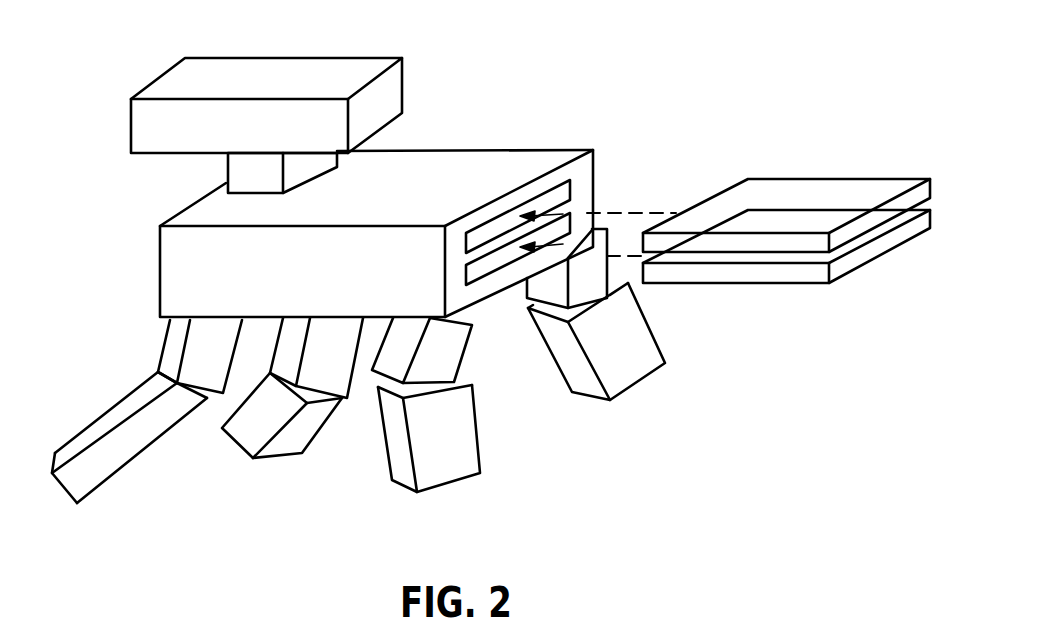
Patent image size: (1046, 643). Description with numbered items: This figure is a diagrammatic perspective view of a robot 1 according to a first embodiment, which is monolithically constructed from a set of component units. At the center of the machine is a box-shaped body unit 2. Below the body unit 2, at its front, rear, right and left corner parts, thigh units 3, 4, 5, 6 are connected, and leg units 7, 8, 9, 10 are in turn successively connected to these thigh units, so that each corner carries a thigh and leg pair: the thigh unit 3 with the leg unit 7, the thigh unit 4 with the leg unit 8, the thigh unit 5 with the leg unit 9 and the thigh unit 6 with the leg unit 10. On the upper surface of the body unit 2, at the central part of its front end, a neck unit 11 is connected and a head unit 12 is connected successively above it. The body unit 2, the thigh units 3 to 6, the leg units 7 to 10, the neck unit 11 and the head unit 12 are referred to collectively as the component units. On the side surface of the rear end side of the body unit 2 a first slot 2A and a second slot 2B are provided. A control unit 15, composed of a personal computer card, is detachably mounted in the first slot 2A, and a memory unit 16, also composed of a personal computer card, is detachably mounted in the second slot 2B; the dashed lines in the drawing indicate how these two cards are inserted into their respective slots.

The robot 1 is at (707, 512).
The body unit 2 is at (418, 219).
The first slot 2A is at (563, 197).
The second slot 2B is at (493, 263).
The thigh unit 3 is at (172, 348).
The thigh unit 4 is at (283, 348).
The thigh unit 5 is at (447, 367).
The thigh unit 6 is at (603, 242).
The leg unit 7 is at (95, 433).
The leg unit 8 is at (248, 440).
The leg unit 9 is at (467, 453).
The leg unit 10 is at (625, 373).
The neck unit 11 is at (235, 173).
The head unit 12 is at (308, 57).
The control unit 15 is at (743, 190).
The memory unit 16 is at (707, 275).